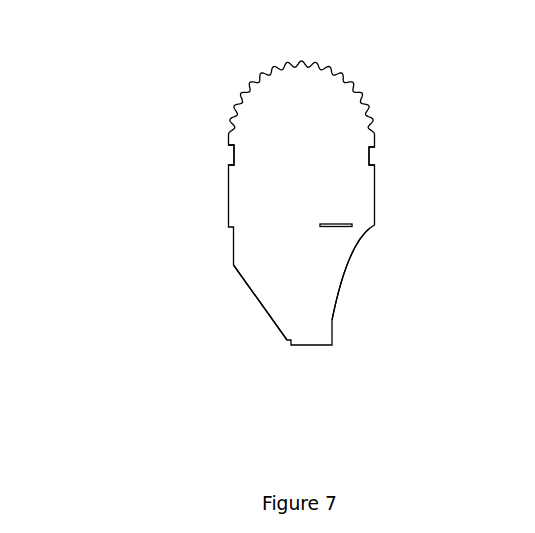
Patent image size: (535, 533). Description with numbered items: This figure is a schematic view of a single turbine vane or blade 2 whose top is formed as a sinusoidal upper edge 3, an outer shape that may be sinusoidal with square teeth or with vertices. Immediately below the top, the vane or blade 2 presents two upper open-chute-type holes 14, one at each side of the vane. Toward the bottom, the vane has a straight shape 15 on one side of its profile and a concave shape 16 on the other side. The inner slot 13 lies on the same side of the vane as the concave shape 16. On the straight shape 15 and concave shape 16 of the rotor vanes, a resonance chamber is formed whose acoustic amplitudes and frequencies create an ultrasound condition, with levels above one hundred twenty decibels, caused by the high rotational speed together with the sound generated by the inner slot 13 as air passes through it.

The vane or blade 2 is at (285, 170).
The sinusoidal upper edge 3 is at (318, 65).
The inner slot 13 is at (322, 226).
The upper open-chute-type holes 14 is at (232, 154).
The straight shape 15 is at (254, 298).
The concave shape 16 is at (342, 285).